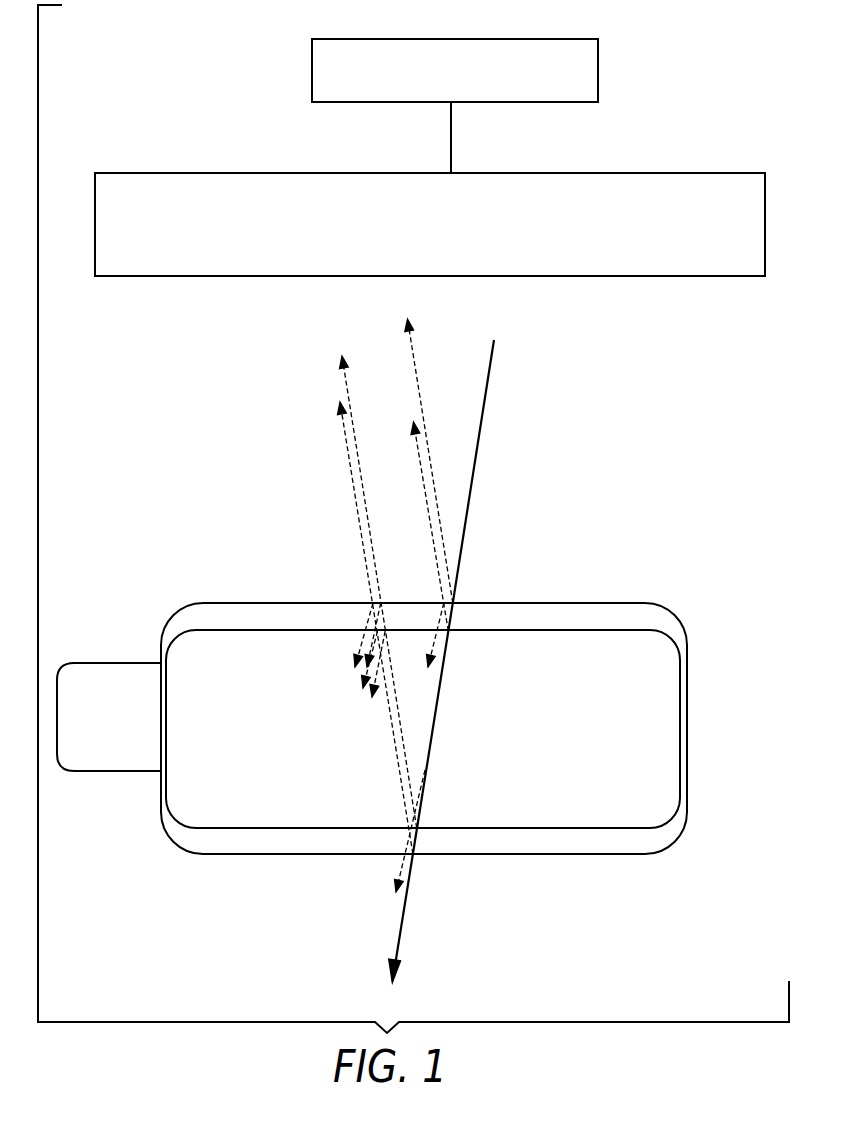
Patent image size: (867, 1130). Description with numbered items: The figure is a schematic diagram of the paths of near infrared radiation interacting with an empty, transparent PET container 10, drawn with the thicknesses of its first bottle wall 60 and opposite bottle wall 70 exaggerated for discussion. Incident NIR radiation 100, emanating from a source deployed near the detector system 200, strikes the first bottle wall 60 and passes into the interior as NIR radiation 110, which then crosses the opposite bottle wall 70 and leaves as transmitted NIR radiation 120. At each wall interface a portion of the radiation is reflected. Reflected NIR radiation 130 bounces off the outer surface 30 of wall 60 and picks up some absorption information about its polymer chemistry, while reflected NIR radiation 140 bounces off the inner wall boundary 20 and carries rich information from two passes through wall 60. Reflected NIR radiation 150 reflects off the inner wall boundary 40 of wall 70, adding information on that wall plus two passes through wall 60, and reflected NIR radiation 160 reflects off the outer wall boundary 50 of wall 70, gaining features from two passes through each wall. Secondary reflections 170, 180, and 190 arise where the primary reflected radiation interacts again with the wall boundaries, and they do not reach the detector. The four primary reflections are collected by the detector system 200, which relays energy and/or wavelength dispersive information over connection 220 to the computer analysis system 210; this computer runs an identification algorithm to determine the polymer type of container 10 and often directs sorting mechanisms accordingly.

The PET container 10 is at (215, 652).
The inner wall boundary 20 is at (258, 629).
The outer surface 30 is at (323, 602).
The inner wall boundary 40 is at (263, 830).
The outer wall boundary 50 is at (322, 855).
The first bottle wall 60 is at (535, 616).
The opposite bottle wall 70 is at (535, 840).
The incident NIR radiation 100 is at (468, 510).
The NIR radiation 110 is at (438, 698).
The transmitted NIR radiation 120 is at (405, 920).
The reflected NIR radiation 130 is at (417, 378).
The reflected NIR radiation 140 is at (417, 453).
The reflected NIR radiation 150 is at (352, 407).
The reflected NIR radiation 160 is at (342, 447).
The secondary reflection 170 is at (355, 682).
The secondary reflection 180 is at (430, 660).
The secondary reflection 190 is at (396, 870).
The detector system 200 is at (653, 259).
The computer analysis system 210 is at (598, 70).
The connection 220 is at (451, 144).